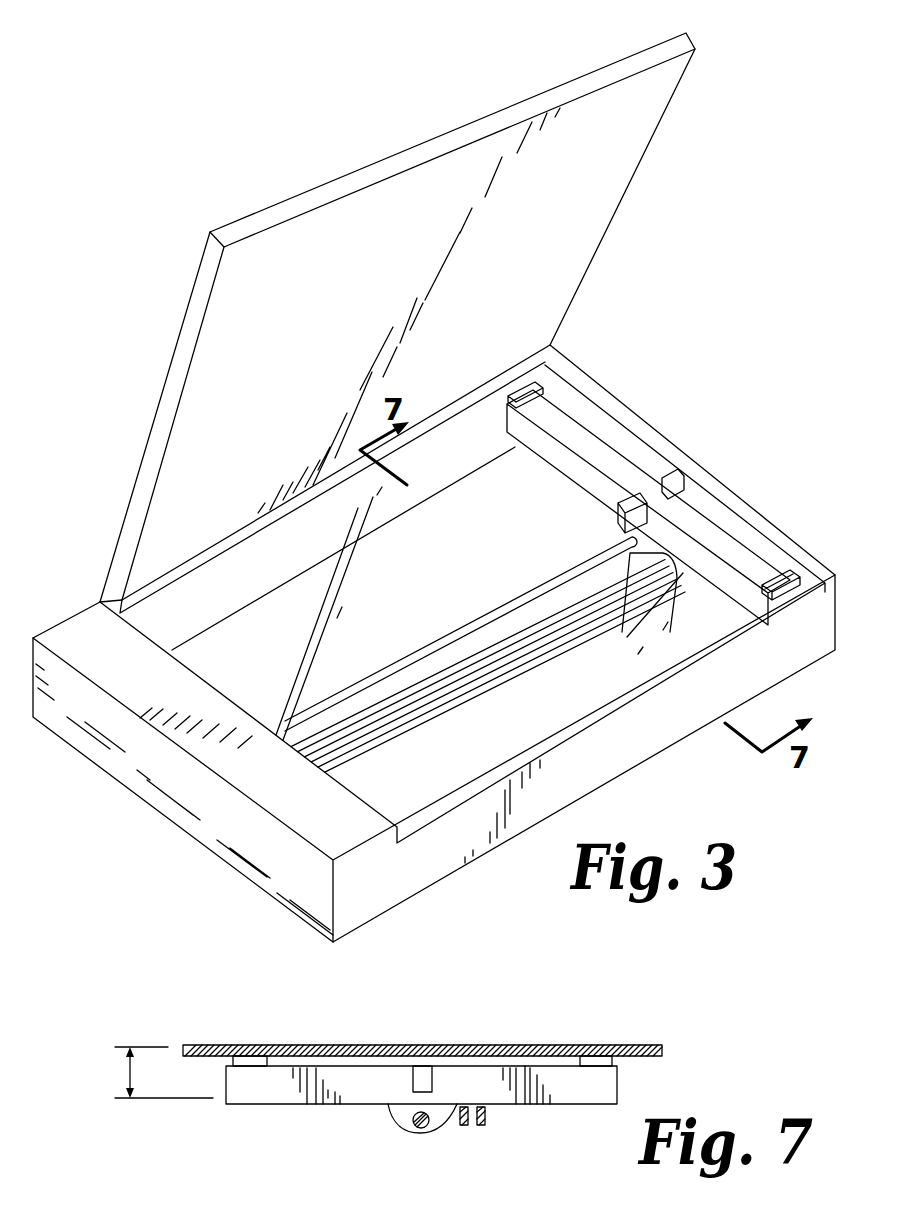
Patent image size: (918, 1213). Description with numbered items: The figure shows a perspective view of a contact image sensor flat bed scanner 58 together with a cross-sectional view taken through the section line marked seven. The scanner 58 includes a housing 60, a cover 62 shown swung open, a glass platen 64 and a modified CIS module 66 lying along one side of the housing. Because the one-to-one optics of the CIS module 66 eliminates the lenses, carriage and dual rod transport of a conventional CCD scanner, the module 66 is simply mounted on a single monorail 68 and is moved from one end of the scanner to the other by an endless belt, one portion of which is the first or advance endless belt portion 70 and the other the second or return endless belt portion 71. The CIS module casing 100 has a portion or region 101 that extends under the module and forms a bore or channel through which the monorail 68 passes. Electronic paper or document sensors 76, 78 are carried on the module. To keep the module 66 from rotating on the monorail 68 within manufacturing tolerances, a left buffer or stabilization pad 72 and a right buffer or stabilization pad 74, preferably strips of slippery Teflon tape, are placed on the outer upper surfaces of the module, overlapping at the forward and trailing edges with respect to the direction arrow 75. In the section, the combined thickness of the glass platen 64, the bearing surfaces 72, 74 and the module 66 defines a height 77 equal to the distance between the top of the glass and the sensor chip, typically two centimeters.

In FIG. 3, the CIS flat bed scanner 58 is at (703, 333).
In FIG. 3, the housing 60 is at (226, 828).
In FIG. 3, the cover 62 is at (268, 267).
In FIG. 3, the glass platen 64 is at (243, 637).
In FIG. 7, the glass platen 64 is at (623, 1044).
In FIG. 3, the modified CIS module 66 is at (690, 515).
In FIG. 7, the modified CIS module 66 is at (586, 1086).
In FIG. 3, the monorail 68 is at (577, 566).
In FIG. 7, the monorail 68 is at (417, 1129).
In FIG. 3, the first or advance endless belt portion 70 is at (456, 674).
In FIG. 7, the first or advance endless belt portion 70 is at (462, 1130).
In FIG. 3, the second or return endless belt portion 71 is at (388, 742).
In FIG. 7, the second or return endless belt portion 71 is at (487, 1117).
In FIG. 3, the left buffer or stabilization pad 72 is at (545, 362).
In FIG. 7, the left buffer or stabilization pad 72 is at (234, 1061).
In FIG. 3, the right buffer or stabilization pad 74 is at (783, 580).
In FIG. 7, the right buffer or stabilization pad 74 is at (603, 1058).
In FIG. 3, the direction arrow 75 is at (448, 537).
In FIG. 3, the electronic paper or document sensor 76 is at (628, 497).
In FIG. 7, the height 77 is at (127, 1073).
In FIG. 3, the electronic paper or document sensor 78 is at (677, 476).
In FIG. 7, the electronic paper or document sensor 78 is at (412, 1076).
In FIG. 3, the CIS module casing 100 is at (713, 567).
In FIG. 3, the portion or region of casing 101 is at (627, 637).
In FIG. 7, the portion or region of casing 101 is at (403, 1118).